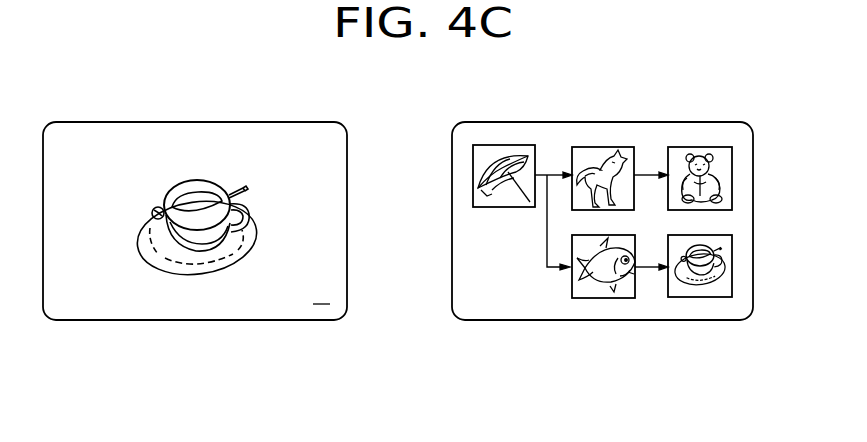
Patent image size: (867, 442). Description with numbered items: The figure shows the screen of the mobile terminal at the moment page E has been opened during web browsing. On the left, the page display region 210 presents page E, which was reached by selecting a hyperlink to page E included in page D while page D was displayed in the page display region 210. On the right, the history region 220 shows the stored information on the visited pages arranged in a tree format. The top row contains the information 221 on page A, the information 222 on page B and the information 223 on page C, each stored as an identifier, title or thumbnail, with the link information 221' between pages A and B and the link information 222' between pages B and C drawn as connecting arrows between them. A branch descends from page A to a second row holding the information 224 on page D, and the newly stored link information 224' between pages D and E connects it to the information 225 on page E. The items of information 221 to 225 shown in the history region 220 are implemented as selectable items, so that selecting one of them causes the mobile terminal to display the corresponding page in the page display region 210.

The page display region 210 is at (310, 122).
The history region 220 is at (717, 122).
The information on page A 221 is at (504, 136).
The link information between pages A and B 221' is at (553, 111).
The information on page B 222 is at (603, 138).
The link information between pages B and C 222' is at (650, 111).
The information on page C 223 is at (697, 147).
The information on page D 224 is at (603, 307).
The link information between pages D and E 224' is at (650, 331).
The information on page E 225 is at (698, 298).